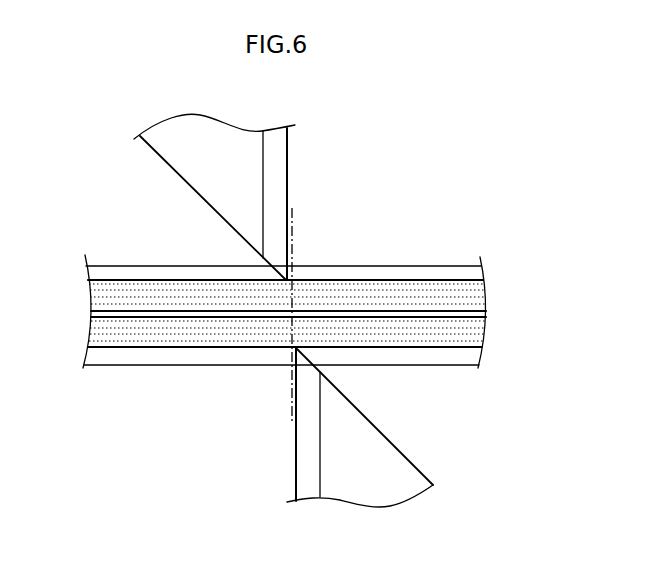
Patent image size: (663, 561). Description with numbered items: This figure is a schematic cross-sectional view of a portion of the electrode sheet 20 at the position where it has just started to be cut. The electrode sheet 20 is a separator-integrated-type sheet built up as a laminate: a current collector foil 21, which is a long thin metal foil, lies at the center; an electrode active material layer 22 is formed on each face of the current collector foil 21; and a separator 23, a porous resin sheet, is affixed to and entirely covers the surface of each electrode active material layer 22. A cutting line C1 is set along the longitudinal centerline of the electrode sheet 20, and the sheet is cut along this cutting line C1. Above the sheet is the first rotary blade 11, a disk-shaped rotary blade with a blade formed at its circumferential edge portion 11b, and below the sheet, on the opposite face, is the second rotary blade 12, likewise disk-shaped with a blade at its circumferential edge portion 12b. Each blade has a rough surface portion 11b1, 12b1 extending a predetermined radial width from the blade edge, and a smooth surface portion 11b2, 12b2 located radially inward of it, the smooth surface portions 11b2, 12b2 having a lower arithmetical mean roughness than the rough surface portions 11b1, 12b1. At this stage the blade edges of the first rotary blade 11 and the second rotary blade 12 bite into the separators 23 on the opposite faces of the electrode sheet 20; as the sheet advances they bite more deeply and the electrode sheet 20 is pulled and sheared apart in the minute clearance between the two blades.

The first rotary blade 11 is at (203, 197).
The circumferential edge portion of the first rotary blade 11b is at (228, 204).
The rough surface portion of the first rotary blade 11b1 is at (279, 178).
The smooth surface portion of the first rotary blade 11b2 is at (193, 192).
The second rotary blade 12 is at (368, 427).
The circumferential edge portion of the second rotary blade 12b is at (354, 424).
The rough surface portion of the second rotary blade 12b1 is at (306, 472).
The smooth surface portion of the second rotary blade 12b2 is at (363, 432).
The electrode sheet 20 is at (320, 284).
The current collector foil 21 is at (480, 314).
The electrode active material layer 22 is at (478, 295).
The separator 23 is at (476, 268).
The cutting line C1 is at (292, 410).